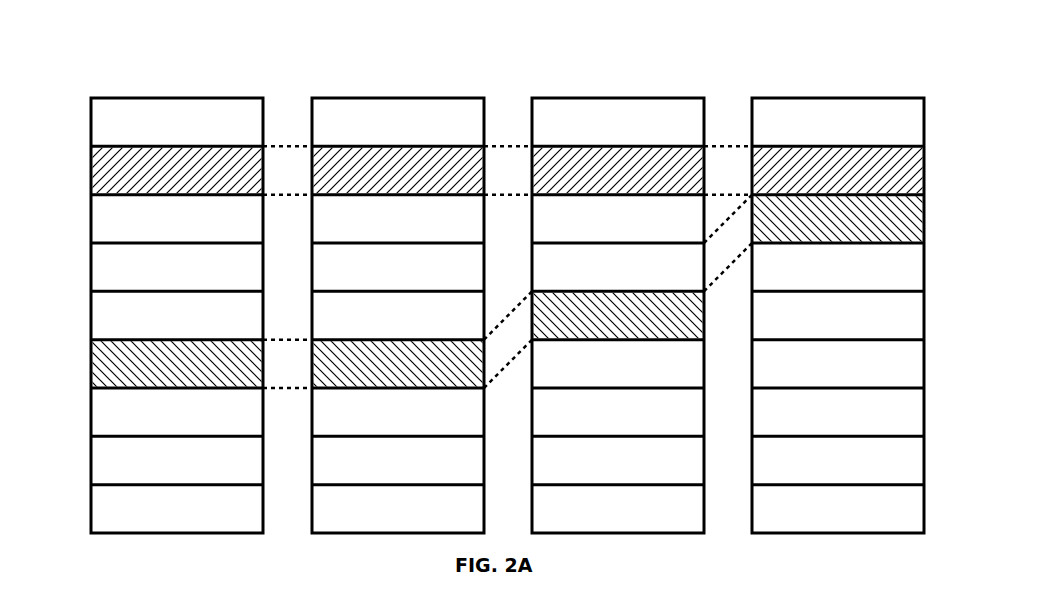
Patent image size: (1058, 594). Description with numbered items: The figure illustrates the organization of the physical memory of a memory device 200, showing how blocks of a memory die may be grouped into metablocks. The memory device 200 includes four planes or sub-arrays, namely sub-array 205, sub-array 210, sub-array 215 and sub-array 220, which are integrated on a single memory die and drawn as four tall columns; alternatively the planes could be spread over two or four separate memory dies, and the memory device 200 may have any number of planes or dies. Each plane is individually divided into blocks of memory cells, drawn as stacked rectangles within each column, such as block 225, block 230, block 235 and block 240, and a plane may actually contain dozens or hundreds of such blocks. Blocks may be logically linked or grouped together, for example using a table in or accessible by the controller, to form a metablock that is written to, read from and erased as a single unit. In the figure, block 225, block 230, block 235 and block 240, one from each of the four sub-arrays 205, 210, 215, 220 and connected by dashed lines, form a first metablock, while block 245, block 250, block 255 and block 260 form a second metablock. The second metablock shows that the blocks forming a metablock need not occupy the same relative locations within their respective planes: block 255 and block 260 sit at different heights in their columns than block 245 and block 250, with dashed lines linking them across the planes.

The memory device 200 is at (78, 76).
The sub-array 205 is at (174, 98).
The sub-array 210 is at (400, 98).
The sub-array 215 is at (609, 98).
The sub-array 220 is at (838, 98).
The block 225 is at (90, 168).
The block 230 is at (311, 163).
The block 235 is at (531, 163).
The block 240 is at (751, 163).
The block 245 is at (90, 363).
The block 250 is at (311, 363).
The block 255 is at (531, 306).
The block 260 is at (926, 206).